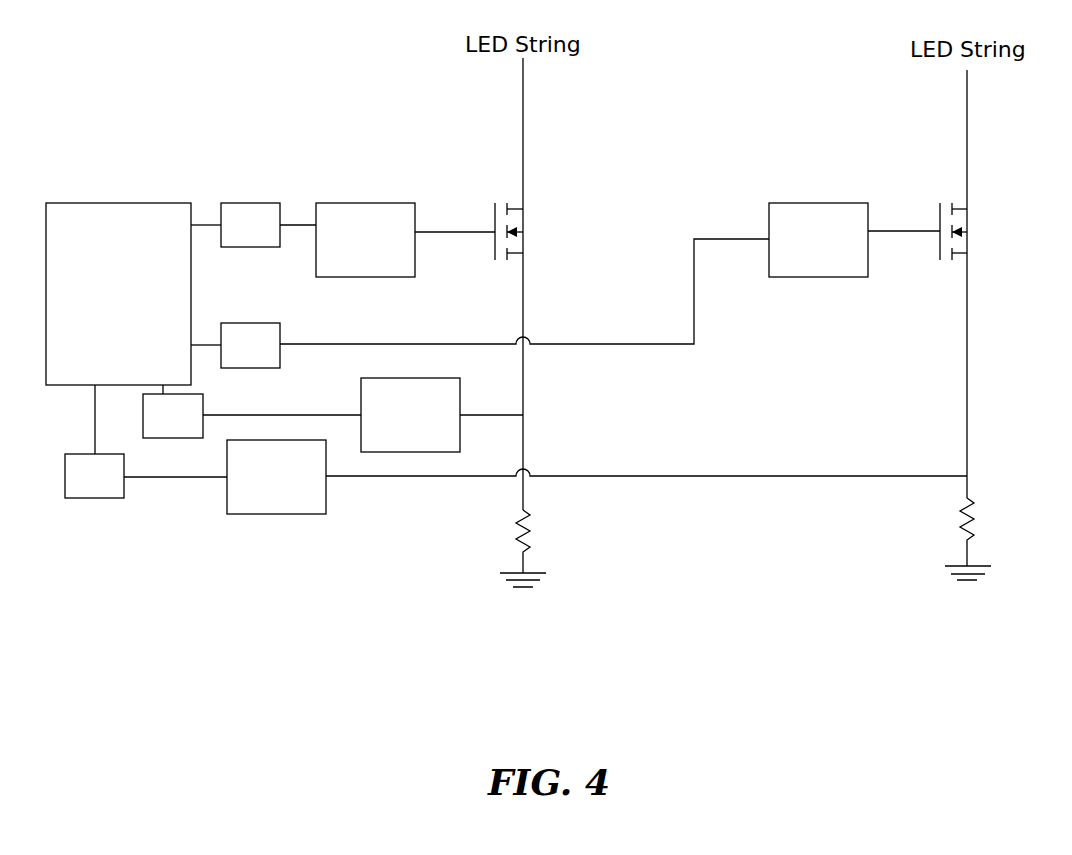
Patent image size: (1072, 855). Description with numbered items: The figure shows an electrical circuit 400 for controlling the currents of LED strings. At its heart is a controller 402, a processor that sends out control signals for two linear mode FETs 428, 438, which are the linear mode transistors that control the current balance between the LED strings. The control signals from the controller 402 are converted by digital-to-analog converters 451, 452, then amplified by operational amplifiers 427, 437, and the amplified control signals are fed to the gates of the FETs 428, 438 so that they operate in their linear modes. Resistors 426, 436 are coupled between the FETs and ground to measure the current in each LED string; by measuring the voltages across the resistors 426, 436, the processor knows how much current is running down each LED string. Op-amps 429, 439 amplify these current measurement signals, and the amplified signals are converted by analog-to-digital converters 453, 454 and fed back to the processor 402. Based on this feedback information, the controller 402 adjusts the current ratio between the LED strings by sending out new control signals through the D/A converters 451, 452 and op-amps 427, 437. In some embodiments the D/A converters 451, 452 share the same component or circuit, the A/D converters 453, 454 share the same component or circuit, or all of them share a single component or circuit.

The electrical circuit 400 is at (293, 95).
The controller 402 is at (118, 294).
The digital-to-analog converter 451 is at (253, 207).
The digital-to-analog converter 452 is at (253, 331).
The analog-to-digital converter 453 is at (197, 411).
The analog-to-digital converter 454 is at (76, 489).
The operational amplifier 427 is at (365, 240).
The operational amplifier 437 is at (818, 240).
The operational amplifier 429 is at (410, 415).
The operational amplifier 439 is at (276, 477).
The linear mode FET 428 is at (499, 212).
The linear mode FET 438 is at (945, 213).
The resistor 426 is at (553, 548).
The resistor 436 is at (984, 539).